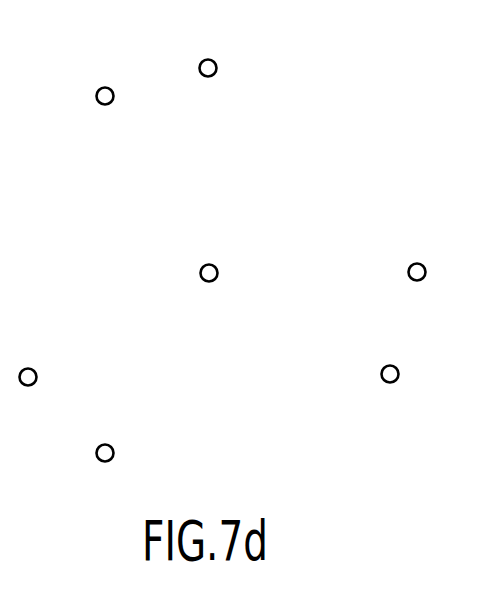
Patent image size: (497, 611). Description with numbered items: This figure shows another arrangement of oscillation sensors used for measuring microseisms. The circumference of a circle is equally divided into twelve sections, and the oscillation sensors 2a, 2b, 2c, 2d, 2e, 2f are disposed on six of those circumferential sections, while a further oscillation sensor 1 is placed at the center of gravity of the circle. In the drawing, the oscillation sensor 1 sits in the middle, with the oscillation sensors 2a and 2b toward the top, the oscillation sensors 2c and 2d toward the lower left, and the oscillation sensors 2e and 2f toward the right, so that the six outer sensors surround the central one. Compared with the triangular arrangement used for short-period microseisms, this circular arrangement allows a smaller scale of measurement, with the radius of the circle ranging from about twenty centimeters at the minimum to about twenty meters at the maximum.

The oscillation sensor 1 is at (216, 266).
The oscillation sensor 2a is at (214, 62).
The oscillation sensor 2b is at (112, 90).
The oscillation sensor 2c is at (34, 370).
The oscillation sensor 2d is at (112, 446).
The oscillation sensor 2e is at (396, 368).
The oscillation sensor 2f is at (424, 266).